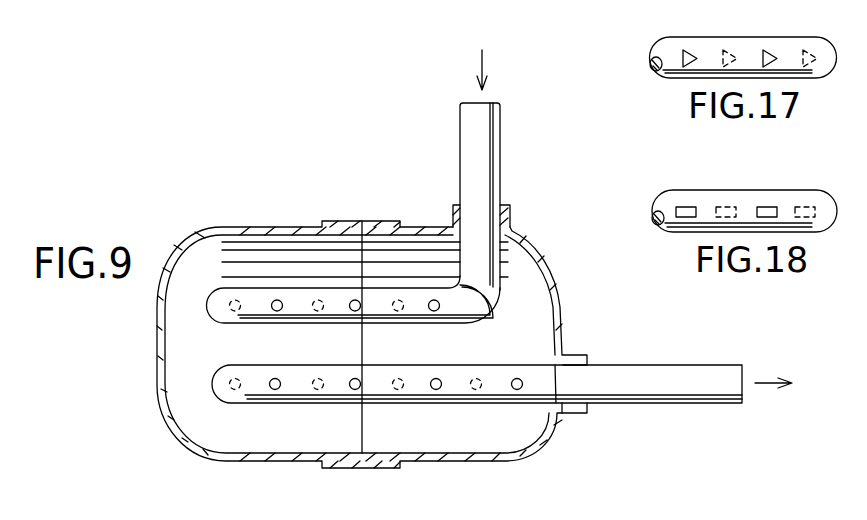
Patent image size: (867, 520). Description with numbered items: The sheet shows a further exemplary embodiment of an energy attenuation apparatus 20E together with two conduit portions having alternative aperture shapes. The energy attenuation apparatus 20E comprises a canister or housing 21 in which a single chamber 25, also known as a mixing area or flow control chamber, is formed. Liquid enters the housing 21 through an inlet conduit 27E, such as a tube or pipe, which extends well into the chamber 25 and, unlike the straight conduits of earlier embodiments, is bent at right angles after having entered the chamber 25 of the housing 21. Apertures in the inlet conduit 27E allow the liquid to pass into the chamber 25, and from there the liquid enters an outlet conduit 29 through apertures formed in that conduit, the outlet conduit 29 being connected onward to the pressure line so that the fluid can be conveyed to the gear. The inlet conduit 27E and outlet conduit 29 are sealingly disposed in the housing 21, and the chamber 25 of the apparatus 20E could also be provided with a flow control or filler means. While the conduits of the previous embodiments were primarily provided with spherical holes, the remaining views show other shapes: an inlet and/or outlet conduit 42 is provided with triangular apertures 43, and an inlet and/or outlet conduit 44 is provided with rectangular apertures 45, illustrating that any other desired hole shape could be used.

In FIG. 9, the energy attenuation apparatus 20E is at (474, 267).
In FIG. 9, the housing 21 is at (566, 315).
In FIG. 9, the chamber 25 is at (237, 353).
In FIG. 9, the inlet conduit 27E is at (462, 128).
In FIG. 9, the outlet conduit 29 is at (700, 404).
In FIG. 17, the inlet and/or outlet conduit 42 is at (668, 45).
In FIG. 17, the triangular apertures 43 is at (680, 60).
In FIG. 18, the inlet and/or outlet conduit 44 is at (665, 198).
In FIG. 18, the rectangular apertures 45 is at (683, 218).